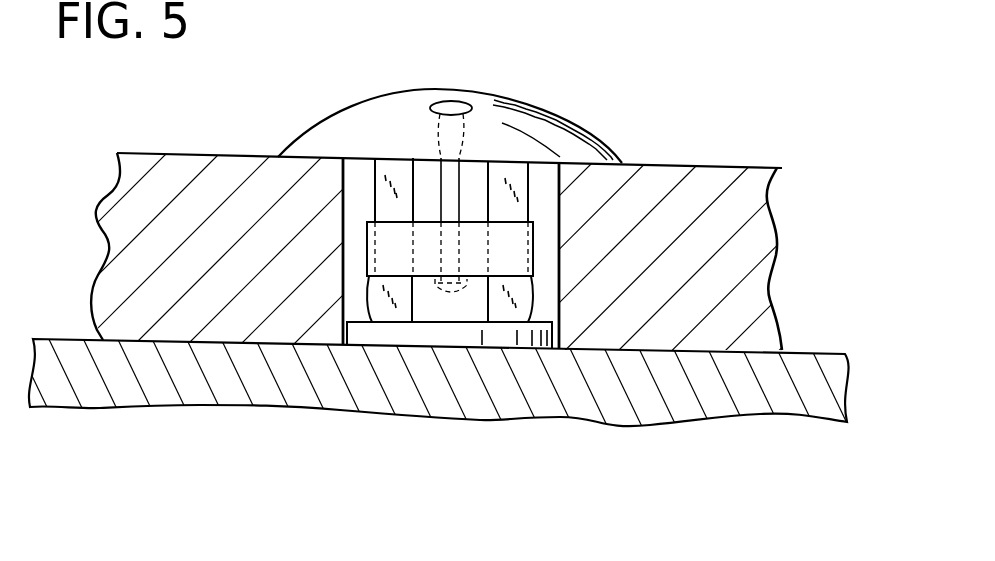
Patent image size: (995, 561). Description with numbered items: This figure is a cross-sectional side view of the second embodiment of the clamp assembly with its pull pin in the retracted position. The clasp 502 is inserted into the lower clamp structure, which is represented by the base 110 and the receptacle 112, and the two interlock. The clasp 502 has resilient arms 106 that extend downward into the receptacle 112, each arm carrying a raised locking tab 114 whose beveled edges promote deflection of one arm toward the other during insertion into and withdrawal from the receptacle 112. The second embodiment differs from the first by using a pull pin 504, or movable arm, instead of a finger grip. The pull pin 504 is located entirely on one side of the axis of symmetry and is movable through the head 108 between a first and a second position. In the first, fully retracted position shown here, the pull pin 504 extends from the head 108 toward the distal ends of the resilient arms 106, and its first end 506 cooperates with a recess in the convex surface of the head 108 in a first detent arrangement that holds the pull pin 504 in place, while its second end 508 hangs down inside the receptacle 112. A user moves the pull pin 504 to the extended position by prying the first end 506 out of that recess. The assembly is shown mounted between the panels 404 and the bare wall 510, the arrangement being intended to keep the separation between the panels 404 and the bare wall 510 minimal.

The resilient arms 106 is at (517, 185).
The head 108 is at (582, 140).
The base 110 is at (388, 333).
The receptacle 112 is at (367, 247).
The locking tab 114 is at (518, 300).
The panels 404 is at (227, 263).
The clasp 502 is at (322, 110).
The pull pin 504 is at (450, 187).
The first end 506 is at (452, 102).
The second end 508 is at (458, 297).
The bare wall 510 is at (182, 385).